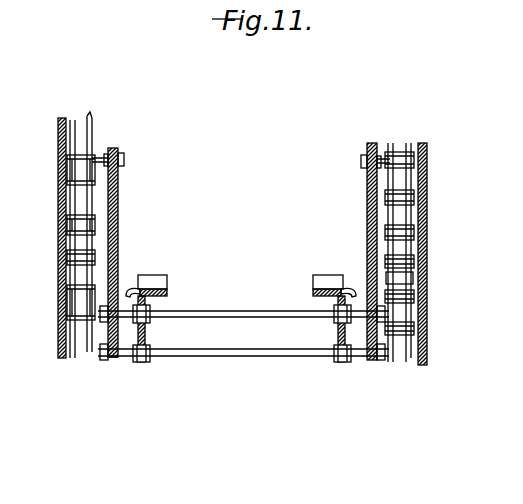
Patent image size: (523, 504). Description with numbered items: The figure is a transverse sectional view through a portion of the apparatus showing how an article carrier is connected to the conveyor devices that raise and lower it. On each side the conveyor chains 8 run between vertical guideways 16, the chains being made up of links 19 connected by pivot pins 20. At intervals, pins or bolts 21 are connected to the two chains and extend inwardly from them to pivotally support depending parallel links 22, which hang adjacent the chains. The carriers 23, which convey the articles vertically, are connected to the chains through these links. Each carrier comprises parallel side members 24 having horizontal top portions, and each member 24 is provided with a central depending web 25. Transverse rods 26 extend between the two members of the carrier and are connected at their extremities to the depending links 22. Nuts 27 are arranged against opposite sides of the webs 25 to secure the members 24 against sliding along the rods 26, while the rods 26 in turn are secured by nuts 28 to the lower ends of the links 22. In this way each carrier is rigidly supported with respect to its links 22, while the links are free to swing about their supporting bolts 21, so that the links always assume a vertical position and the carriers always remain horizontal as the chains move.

The conveyor chains 8 is at (73, 358).
The vertical guideways 16 is at (58, 280).
The links 19 is at (405, 277).
The pivot pins 20 is at (390, 192).
The pins or bolts 21 is at (99, 157).
The depending parallel links 22 is at (118, 248).
The carriers 23 is at (165, 280).
The side members 24 is at (167, 290).
The depending web 25 is at (147, 329).
The transverse rods 26 is at (233, 300).
The nuts 27 is at (150, 358).
The nuts 28 is at (115, 357).